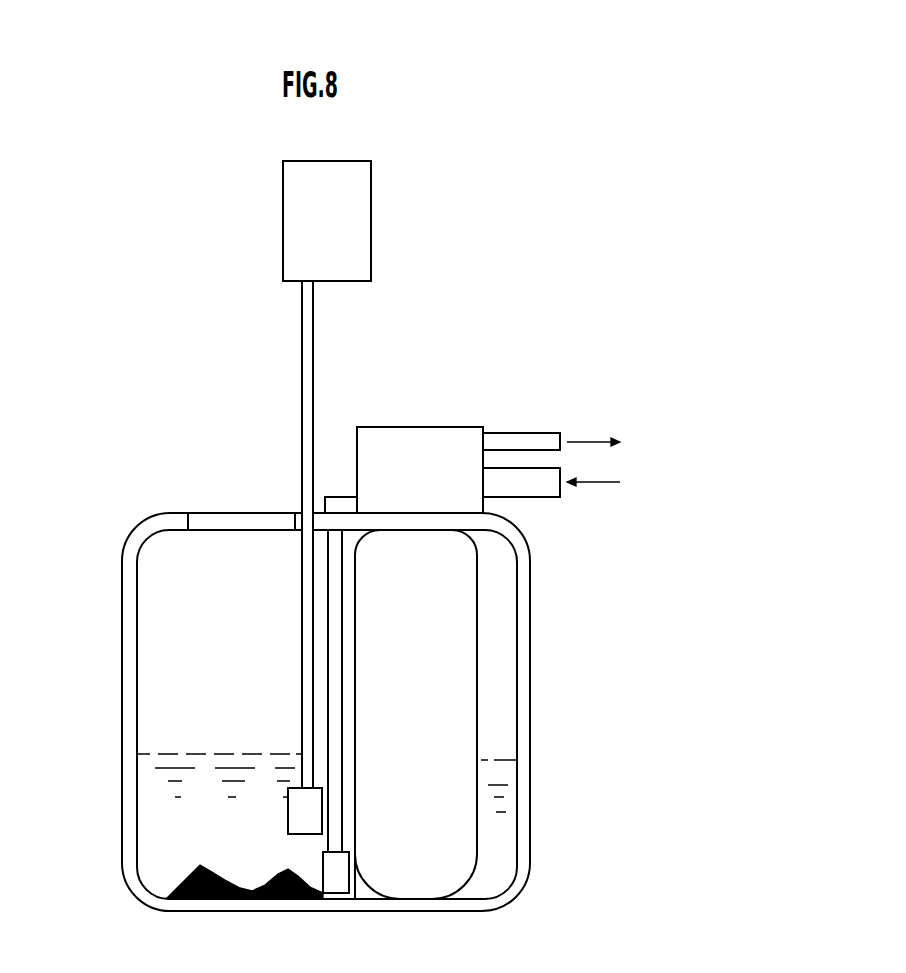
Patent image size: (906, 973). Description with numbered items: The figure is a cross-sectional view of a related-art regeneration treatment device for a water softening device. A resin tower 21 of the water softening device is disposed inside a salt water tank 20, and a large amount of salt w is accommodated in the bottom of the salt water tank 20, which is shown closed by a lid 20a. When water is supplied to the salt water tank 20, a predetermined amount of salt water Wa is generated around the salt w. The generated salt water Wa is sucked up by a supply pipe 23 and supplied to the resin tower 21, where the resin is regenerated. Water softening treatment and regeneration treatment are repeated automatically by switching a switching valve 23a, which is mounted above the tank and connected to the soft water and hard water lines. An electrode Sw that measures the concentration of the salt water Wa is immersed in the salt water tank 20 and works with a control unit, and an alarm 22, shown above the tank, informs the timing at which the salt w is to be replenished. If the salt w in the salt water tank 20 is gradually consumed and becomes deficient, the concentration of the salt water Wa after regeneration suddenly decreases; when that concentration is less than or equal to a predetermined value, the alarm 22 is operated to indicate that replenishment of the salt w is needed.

The salt water tank 20 is at (128, 627).
The lid 20a is at (226, 522).
The resin tower 21 is at (467, 678).
The alarm 22 is at (290, 203).
The supply pipe 23 is at (333, 765).
The switching valve 23a is at (443, 435).
The electrode Sw is at (297, 813).
The salt water Wa is at (197, 755).
The salt w is at (185, 872).